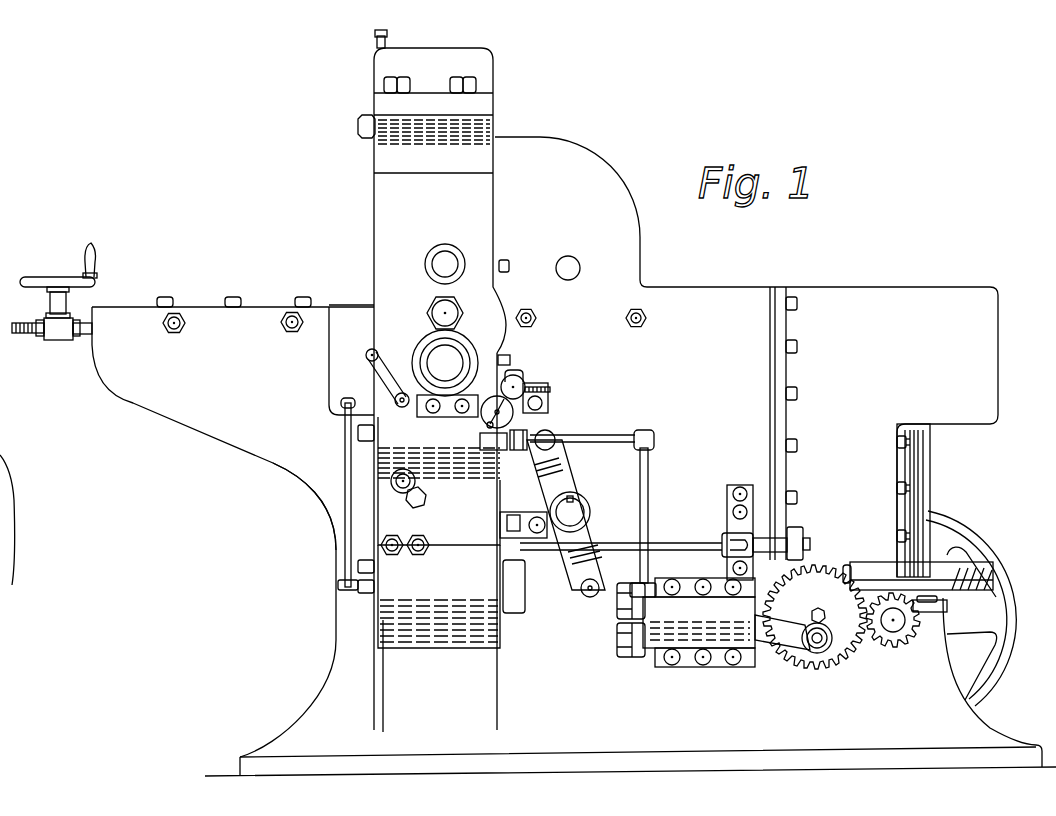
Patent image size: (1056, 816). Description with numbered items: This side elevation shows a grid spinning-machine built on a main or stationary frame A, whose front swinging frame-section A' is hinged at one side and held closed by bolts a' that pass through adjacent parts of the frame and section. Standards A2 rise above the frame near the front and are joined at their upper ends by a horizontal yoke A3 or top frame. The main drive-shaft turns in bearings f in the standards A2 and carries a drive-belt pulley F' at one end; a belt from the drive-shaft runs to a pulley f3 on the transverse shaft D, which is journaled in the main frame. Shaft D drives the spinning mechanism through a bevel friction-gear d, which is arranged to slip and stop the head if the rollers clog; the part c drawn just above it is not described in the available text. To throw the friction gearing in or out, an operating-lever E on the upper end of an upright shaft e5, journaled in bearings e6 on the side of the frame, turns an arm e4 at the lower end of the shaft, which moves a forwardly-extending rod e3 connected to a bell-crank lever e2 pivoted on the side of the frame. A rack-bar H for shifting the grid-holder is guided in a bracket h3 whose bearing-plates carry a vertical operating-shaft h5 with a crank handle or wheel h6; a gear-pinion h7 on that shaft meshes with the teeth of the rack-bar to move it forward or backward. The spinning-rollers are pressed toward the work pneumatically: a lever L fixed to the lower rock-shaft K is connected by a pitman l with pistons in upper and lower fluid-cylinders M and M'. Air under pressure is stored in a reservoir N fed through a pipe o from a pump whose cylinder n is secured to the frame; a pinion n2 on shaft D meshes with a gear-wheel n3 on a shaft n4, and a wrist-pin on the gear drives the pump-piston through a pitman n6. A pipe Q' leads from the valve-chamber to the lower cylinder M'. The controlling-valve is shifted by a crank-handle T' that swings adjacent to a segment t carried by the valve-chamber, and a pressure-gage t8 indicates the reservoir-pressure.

The main frame A is at (630, 456).
The front swinging frame-section A' is at (187, 527).
The standards A2 is at (417, 452).
The horizontal yoke A3 is at (425, 101).
The bearings f is at (428, 360).
The drive-belt pulley F' is at (445, 363).
The crank-handle T' is at (376, 376).
The segment t is at (404, 392).
The reservoir N is at (439, 437).
The pressure-gage t8 is at (486, 427).
The operating-lever E is at (525, 377).
The upright shaft e5 is at (517, 422).
The bearings e6 is at (548, 405).
The lever L is at (572, 478).
The lower rock-shaft K is at (570, 512).
The pitman l is at (578, 590).
The pipe o is at (648, 483).
The forwardly-extending rod e3 is at (660, 548).
The arm e4 is at (500, 535).
The bell-crank lever e2 is at (806, 544).
The upper fluid-cylinder M is at (439, 512).
The lower fluid-cylinder M' is at (439, 596).
The bolts a' is at (335, 495).
The pipe Q' is at (306, 506).
The pump cylinder n is at (686, 622).
The pitman n6 is at (795, 645).
The gear-wheel n3 is at (815, 630).
The shaft n4 is at (826, 615).
The pinion n2 is at (893, 648).
The transverse shaft D is at (900, 626).
The bracket c is at (920, 500).
The bevel friction-gear d is at (970, 587).
The pulley f3 is at (992, 676).
The crank handle or wheel h6 is at (58, 265).
The vertical operating-shaft h5 is at (49, 302).
The rack-bar H is at (20, 325).
The gear-pinion h7 is at (38, 337).
The bracket h3 is at (85, 337).